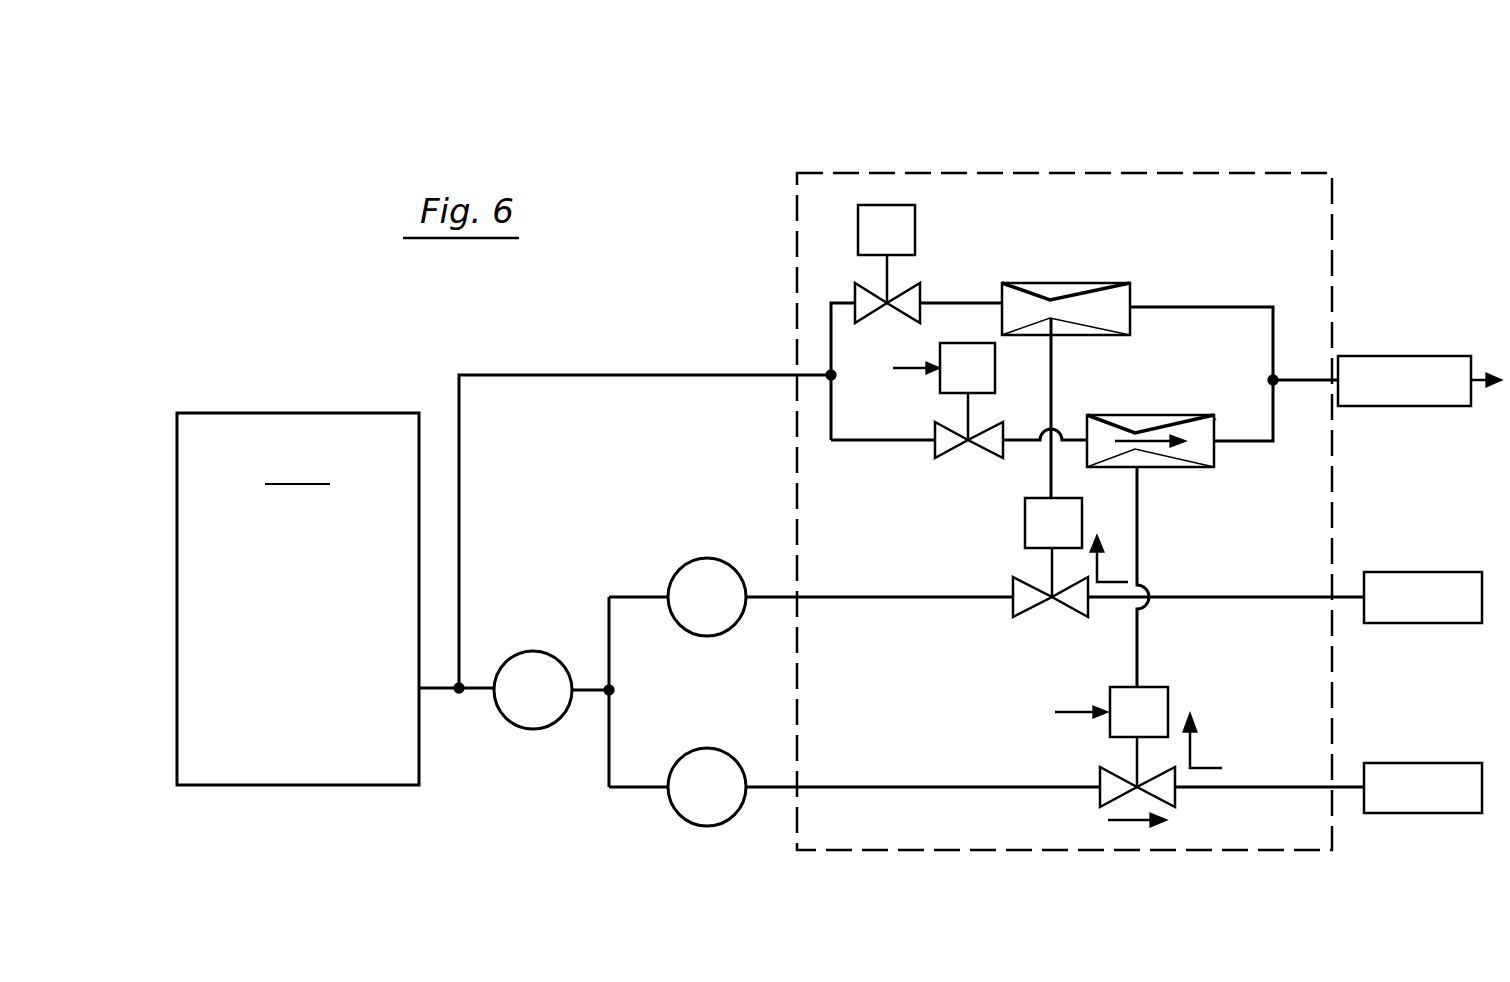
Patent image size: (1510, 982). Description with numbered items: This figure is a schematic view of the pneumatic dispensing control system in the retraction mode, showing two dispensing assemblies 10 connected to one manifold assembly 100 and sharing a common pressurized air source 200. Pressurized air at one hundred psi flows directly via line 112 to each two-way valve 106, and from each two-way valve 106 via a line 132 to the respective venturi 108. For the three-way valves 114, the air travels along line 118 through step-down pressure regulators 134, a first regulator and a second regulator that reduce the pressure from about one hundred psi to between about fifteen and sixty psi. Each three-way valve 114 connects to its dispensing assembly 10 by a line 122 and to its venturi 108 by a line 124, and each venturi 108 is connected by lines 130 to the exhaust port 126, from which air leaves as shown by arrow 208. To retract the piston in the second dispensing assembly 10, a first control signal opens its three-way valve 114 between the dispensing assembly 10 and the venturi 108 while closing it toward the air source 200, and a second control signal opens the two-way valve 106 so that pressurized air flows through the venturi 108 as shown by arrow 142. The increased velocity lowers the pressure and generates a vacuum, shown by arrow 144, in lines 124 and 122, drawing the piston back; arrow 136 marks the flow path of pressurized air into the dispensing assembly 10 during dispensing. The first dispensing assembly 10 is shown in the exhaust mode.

The dispensing assembly 10 is at (1423, 572).
The manifold assembly 100 is at (797, 212).
The two-way valve 106 is at (855, 300).
The venturi 108 is at (1090, 322).
The line 112 is at (623, 375).
The three-way valve 114 is at (1030, 608).
The line 118 is at (860, 597).
The line 122 is at (1240, 597).
The line 124 is at (1051, 477).
The exhaust port 126 is at (1400, 406).
The lines 130 is at (1170, 307).
The line 132 is at (978, 303).
The step-down pressure regulator 134 is at (512, 730).
The arrow 136 is at (1130, 820).
The arrow 142 is at (1215, 418).
The arrow 144 is at (1195, 756).
The pressurized air source 200 is at (298, 599).
The arrow 208 is at (1488, 378).